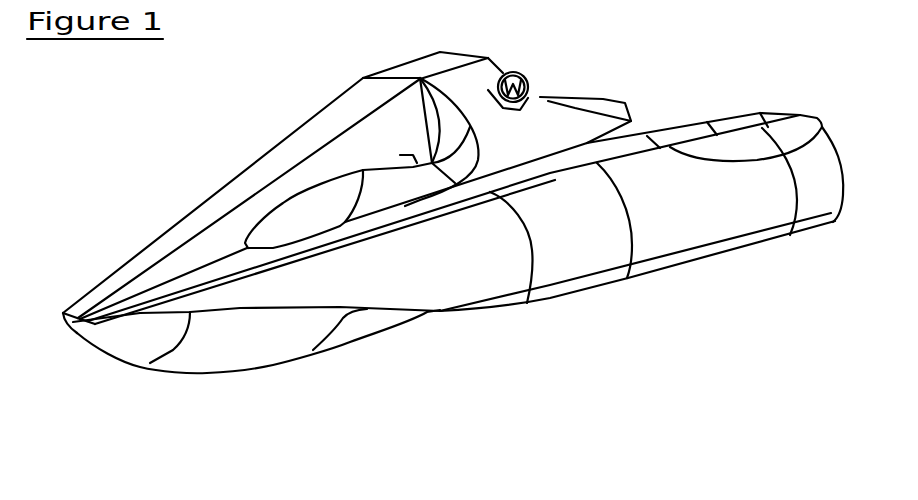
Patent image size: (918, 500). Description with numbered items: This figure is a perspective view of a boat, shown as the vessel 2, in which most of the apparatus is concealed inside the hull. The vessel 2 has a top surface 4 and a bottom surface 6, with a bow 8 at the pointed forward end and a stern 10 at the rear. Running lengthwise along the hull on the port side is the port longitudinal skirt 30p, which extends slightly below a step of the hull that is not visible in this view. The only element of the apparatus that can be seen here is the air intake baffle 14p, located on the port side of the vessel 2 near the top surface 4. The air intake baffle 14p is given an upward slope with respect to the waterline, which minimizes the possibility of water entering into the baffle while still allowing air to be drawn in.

The vessel 2 is at (363, 78).
The top surface 4 is at (270, 148).
The bow 8 is at (66, 312).
The air intake baffle 14p is at (524, 74).
The stern 10 is at (718, 107).
The port longitudinal skirt 30p is at (755, 238).
The bottom surface 6 is at (250, 371).